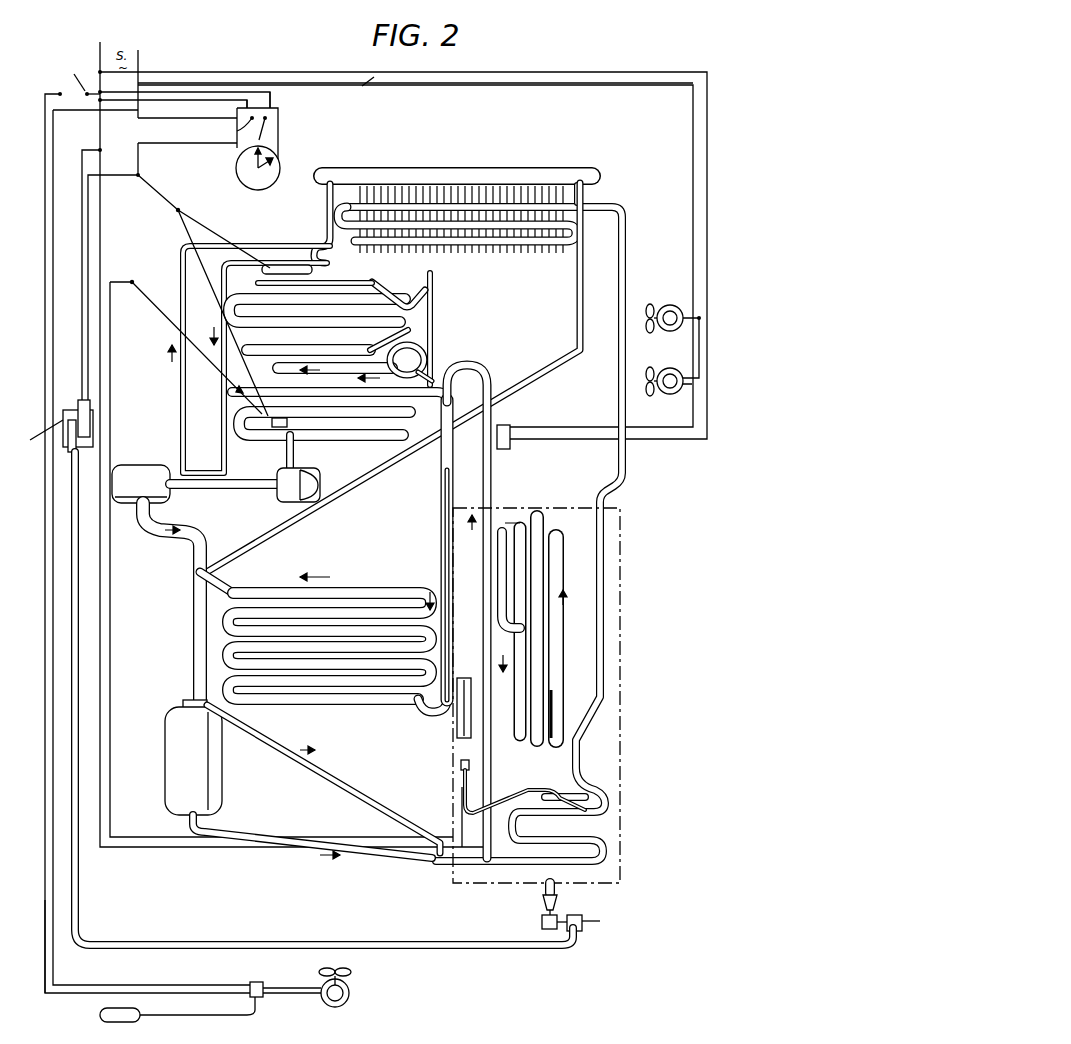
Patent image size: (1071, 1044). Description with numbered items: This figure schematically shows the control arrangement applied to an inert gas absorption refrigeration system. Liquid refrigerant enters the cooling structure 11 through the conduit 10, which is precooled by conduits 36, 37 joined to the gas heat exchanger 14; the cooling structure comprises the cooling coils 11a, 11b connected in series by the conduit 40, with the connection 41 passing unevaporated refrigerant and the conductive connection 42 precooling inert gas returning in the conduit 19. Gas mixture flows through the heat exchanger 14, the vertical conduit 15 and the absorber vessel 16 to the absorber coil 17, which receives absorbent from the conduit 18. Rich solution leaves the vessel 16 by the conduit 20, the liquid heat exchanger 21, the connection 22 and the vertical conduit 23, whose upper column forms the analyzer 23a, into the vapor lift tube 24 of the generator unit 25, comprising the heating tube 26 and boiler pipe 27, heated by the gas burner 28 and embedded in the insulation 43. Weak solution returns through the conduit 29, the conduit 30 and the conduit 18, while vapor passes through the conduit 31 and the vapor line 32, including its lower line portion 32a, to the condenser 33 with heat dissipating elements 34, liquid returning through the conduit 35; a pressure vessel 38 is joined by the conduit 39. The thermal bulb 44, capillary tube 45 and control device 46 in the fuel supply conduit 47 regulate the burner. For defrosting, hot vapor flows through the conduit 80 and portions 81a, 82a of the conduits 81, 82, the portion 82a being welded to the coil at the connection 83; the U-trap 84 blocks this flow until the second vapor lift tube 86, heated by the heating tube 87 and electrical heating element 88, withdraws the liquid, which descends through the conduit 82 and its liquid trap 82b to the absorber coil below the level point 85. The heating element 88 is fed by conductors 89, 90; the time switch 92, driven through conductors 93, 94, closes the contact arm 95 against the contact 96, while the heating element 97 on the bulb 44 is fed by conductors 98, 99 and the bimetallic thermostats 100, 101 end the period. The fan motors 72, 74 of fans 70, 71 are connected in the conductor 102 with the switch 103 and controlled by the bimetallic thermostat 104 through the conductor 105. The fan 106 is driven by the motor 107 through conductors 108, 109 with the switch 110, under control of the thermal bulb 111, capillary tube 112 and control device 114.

The conduit 10 is at (400, 278).
The cooling structure 11 is at (446, 312).
The cooling coil 11a is at (238, 322).
The cooling coil 11b is at (388, 452).
The gas heat exchanger 14 is at (200, 495).
The vertical conduit 15 is at (190, 698).
The absorber vessel 16 is at (173, 766).
The absorber coil 17 is at (380, 592).
The conduit 18 is at (193, 640).
The conduit 19 is at (236, 430).
The conduit 20 is at (380, 863).
The liquid heat exchanger 21 is at (607, 848).
The connection 22 is at (604, 790).
The vertical conduit 23 is at (585, 822).
The analyzer 23a is at (585, 735).
The vapor lift tube 24 is at (560, 658).
The generator unit 25 is at (602, 650).
The heating tube 26 is at (552, 710).
The boiler pipe 27 is at (542, 522).
The gas burner 28 is at (558, 902).
The conduit 29 is at (587, 797).
The conduit 30 is at (275, 748).
The conduit 31 is at (515, 688).
The vapor line 32 is at (627, 250).
The conduit portion 32a is at (612, 493).
The air-cooled condenser 33 is at (530, 242).
The heat dissipating elements 34 is at (488, 250).
The conduit 35 is at (305, 258).
The conduit 36 is at (180, 420).
The conduit 37 is at (224, 398).
The pressure vessel 38 is at (497, 170).
The conduit 39 is at (578, 293).
The conduit 40 is at (436, 318).
The connection 41 is at (422, 350).
The conductive connection 42 is at (360, 400).
The body of insulation material 43 is at (558, 505).
The thermal bulb 44 is at (34, 435).
The capillary tube 45 is at (322, 940).
The control device 46 is at (585, 931).
The fuel supply conduit 47 is at (558, 930).
The fan 70 is at (650, 304).
The fan 71 is at (647, 396).
The fan motor 72 is at (672, 305).
The fan motor 74 is at (668, 394).
The conduit 80 is at (497, 567).
The conduit 81 is at (484, 765).
The upper portion of conduit 81 81a is at (492, 412).
The conduit 82 is at (440, 500).
The upper portion of conduit 82 82a is at (310, 400).
The liquid trap 82b is at (425, 712).
The heat conductive connection 83 is at (352, 300).
The U-trap 84 is at (497, 607).
The level III point 85 is at (215, 590).
The second vapor lift tube 86 is at (460, 477).
The heating tube 87 is at (457, 738).
The electrical heating element 88 is at (461, 765).
The conductor 89 is at (138, 54).
The conductor 90 is at (100, 735).
The electric time switch 92 is at (236, 150).
The conductor 93 is at (278, 100).
The conductor 94 is at (278, 110).
The contact arm 95 is at (278, 131).
The contact 96 is at (242, 131).
The electrical heating element 97 is at (93, 420).
The conductor 98 is at (88, 225).
The conductor 99 is at (82, 262).
The bimetallic thermostat 100 is at (338, 258).
The bimetallic thermostat 101 is at (275, 428).
The conductor 102 is at (707, 240).
The manually operable switch 103 is at (378, 80).
The bimetallic thermostat 104 is at (512, 447).
The conductor 105 is at (703, 283).
The fan 106 is at (352, 972).
The electric motor 107 is at (349, 997).
The conductor 108 is at (45, 972).
The conductor 109 is at (100, 975).
The switch 110 is at (60, 94).
The thermal bulb 111 is at (118, 1022).
The capillary tube 112 is at (200, 1017).
The control device 114 is at (272, 970).